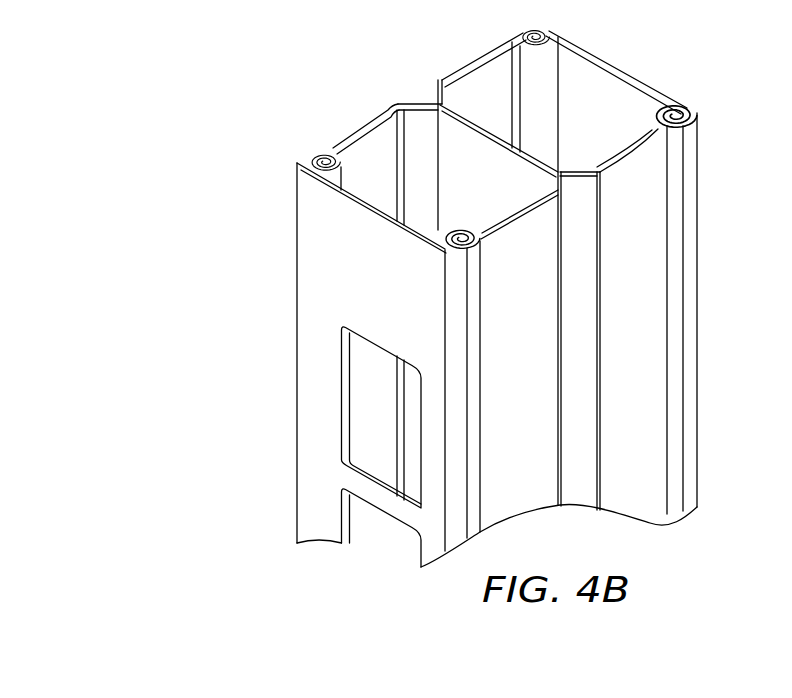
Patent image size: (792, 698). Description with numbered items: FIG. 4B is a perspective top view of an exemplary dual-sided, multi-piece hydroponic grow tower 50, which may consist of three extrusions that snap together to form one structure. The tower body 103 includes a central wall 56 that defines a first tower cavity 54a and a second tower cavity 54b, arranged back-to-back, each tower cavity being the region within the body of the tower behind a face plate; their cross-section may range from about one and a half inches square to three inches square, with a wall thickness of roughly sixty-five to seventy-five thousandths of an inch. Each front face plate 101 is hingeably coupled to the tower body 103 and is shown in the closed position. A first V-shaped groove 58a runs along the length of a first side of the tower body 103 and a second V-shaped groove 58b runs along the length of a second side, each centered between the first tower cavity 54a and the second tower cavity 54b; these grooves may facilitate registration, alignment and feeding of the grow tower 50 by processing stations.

The grow tower 50 is at (256, 192).
The front face plate 101 is at (314, 236).
The tower body 103 is at (329, 138).
The first tower cavity 54a is at (386, 142).
The second tower cavity 54b is at (583, 92).
The central wall 56 is at (478, 152).
The first V-shaped groove 58a is at (432, 102).
The second V-shaped groove 58b is at (570, 182).